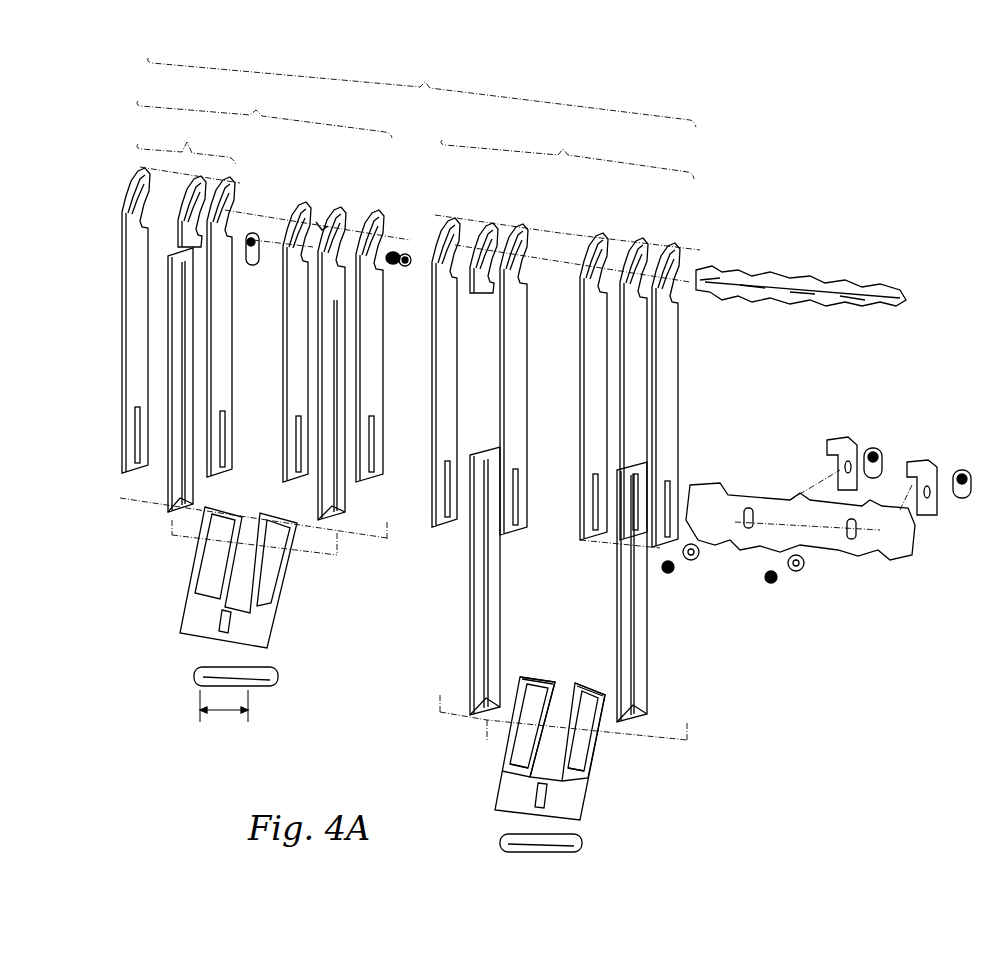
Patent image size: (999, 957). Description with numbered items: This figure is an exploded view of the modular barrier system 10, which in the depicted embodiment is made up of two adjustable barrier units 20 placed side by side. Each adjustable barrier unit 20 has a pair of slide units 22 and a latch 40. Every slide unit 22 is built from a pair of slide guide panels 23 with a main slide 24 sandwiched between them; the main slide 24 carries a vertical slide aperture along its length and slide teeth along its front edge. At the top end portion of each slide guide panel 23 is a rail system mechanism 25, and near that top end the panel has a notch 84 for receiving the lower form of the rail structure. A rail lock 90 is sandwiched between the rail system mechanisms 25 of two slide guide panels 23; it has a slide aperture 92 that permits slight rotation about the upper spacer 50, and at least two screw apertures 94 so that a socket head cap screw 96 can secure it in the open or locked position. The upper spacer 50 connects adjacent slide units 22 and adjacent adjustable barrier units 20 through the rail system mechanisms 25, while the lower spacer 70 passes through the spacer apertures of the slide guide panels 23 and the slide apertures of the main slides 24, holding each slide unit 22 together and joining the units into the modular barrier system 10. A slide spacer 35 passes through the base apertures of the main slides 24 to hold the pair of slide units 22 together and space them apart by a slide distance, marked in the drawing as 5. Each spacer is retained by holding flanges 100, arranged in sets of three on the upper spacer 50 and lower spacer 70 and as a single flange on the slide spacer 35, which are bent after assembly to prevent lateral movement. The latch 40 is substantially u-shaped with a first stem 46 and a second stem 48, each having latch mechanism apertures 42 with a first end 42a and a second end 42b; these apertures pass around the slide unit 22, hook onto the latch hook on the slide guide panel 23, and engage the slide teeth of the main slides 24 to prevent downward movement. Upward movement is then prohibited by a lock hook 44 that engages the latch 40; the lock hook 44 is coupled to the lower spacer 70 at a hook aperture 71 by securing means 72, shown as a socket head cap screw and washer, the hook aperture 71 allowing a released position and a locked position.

The modular barrier system 10 is at (422, 92).
The adjustable barrier unit 20 is at (415, 135).
The slide unit 22 is at (186, 142).
The slide guide panel 23 is at (232, 338).
The main slide 24 is at (172, 478).
The rail system mechanism 25 is at (232, 190).
The notch 84 is at (232, 212).
The rail lock 90 is at (320, 215).
The slide aperture 92 is at (342, 222).
The screw apertures 94 is at (290, 225).
The socket head cap screw 96 is at (398, 265).
The latch 40 is at (262, 634).
The latch mechanism apertures 42 is at (210, 580).
The first end 42a is at (595, 690).
The second end 42b is at (505, 775).
The first stem 46 is at (512, 742).
The second stem 48 is at (600, 745).
The slide spacer 35 is at (198, 676).
The spacing dimension 5 is at (224, 712).
The holding flanges 100 is at (735, 278).
The upper spacer 50 is at (850, 283).
The lower spacer 70 is at (760, 498).
The hook aperture 71 is at (750, 530).
The securing means 72 is at (796, 573).
The lock hook 44 is at (848, 440).